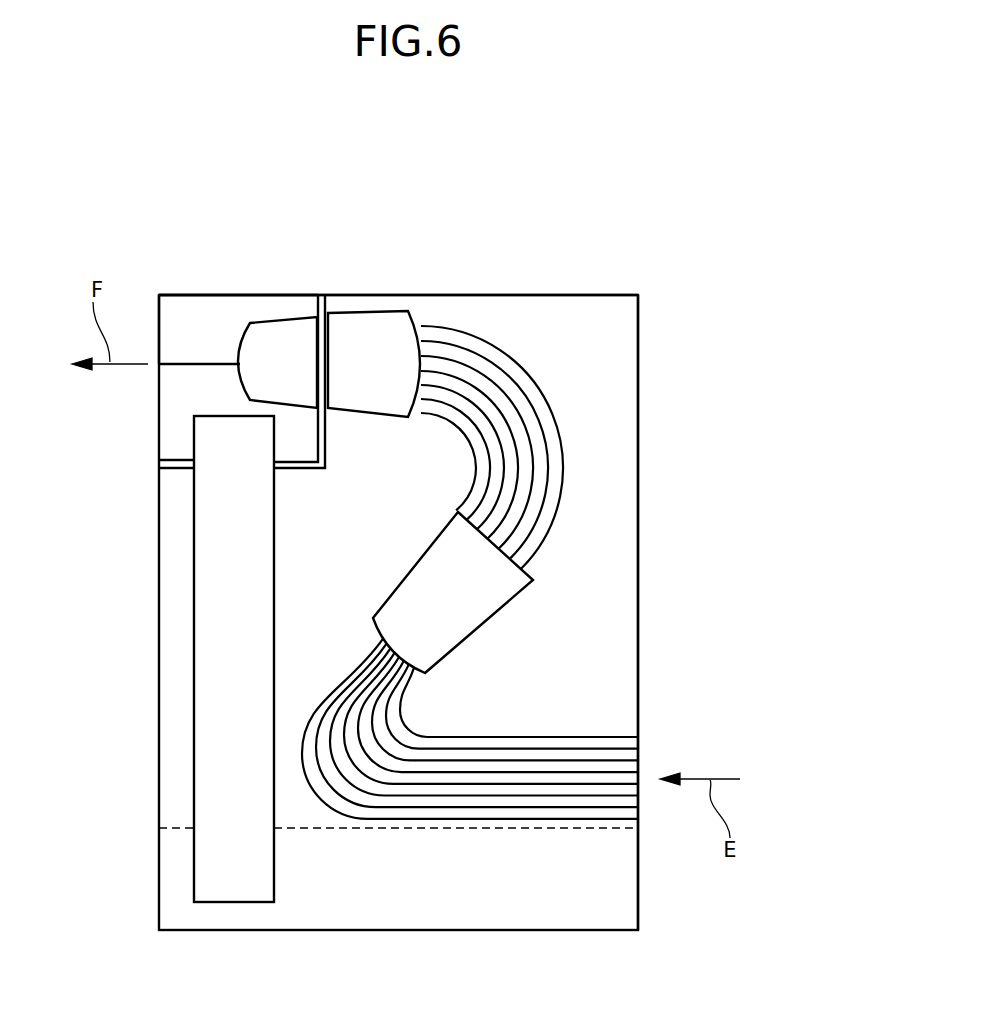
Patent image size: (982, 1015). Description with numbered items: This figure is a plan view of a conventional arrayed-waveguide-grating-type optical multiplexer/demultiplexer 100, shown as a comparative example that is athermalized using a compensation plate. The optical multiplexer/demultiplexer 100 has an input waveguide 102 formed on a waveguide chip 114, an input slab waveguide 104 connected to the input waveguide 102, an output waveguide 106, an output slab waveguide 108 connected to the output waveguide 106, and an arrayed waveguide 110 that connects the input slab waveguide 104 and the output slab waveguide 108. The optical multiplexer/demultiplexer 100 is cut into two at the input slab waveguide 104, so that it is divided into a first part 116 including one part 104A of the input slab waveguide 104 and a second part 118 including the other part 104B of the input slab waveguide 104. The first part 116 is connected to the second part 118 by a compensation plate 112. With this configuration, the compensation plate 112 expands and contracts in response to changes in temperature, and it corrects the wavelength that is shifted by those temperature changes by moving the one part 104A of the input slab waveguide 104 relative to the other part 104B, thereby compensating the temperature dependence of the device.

The optical multiplexer/demultiplexer 100 is at (725, 220).
The input waveguide 102 is at (193, 365).
The input slab waveguide 104 is at (357, 309).
The one part of the input slab waveguide 104A is at (277, 323).
The other part of the input slab waveguide 104B is at (385, 312).
The output waveguide 106 is at (615, 736).
The output slab waveguide 108 is at (498, 612).
The arrayed waveguide 110 is at (570, 457).
The compensation plate 112 is at (193, 652).
The waveguide chip 114 is at (663, 388).
The first part 116 is at (178, 295).
The second part 118 is at (600, 295).